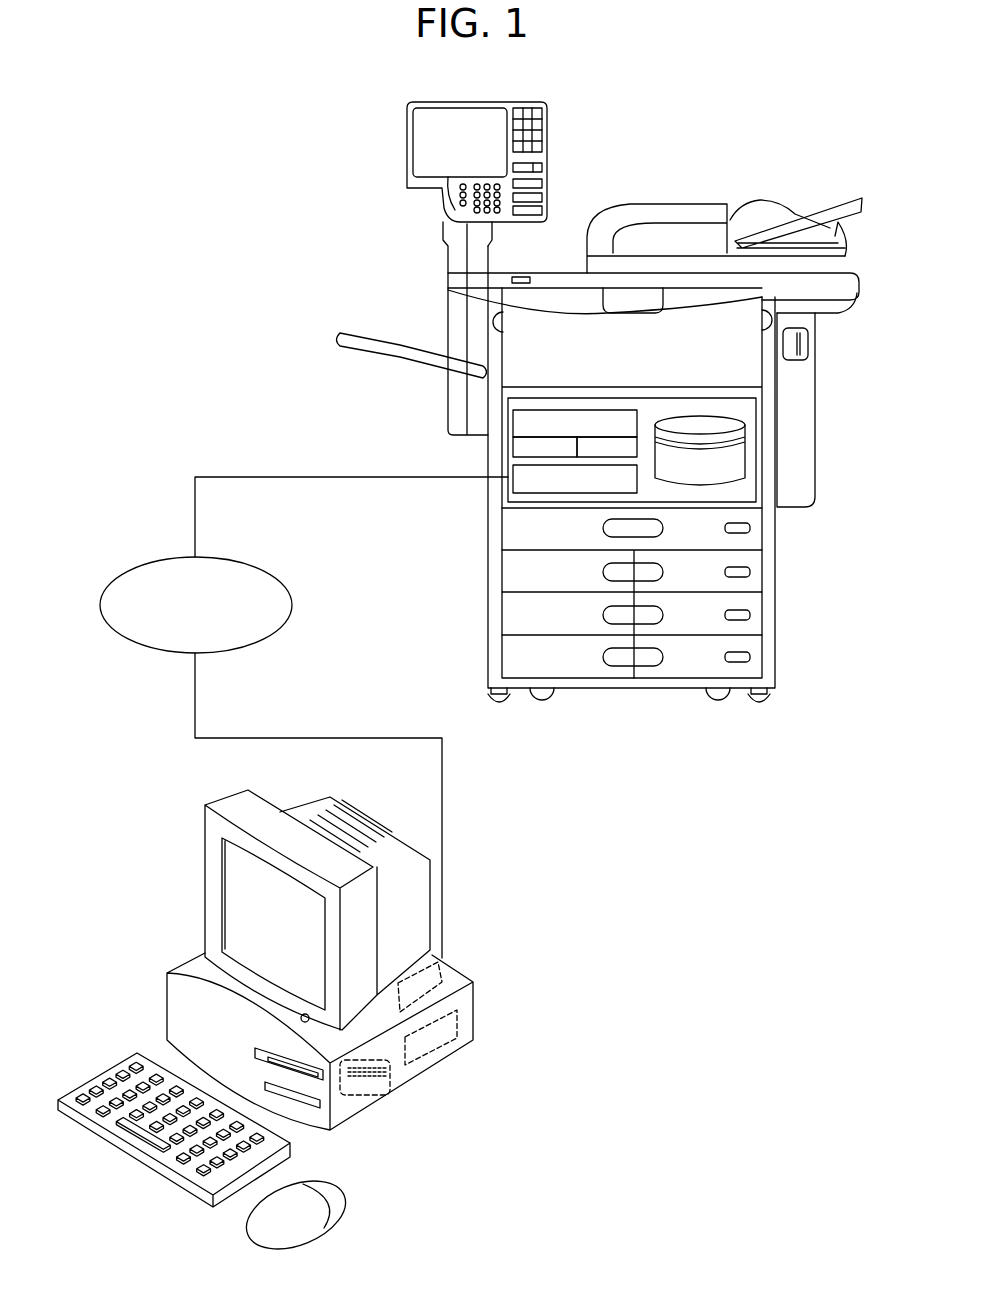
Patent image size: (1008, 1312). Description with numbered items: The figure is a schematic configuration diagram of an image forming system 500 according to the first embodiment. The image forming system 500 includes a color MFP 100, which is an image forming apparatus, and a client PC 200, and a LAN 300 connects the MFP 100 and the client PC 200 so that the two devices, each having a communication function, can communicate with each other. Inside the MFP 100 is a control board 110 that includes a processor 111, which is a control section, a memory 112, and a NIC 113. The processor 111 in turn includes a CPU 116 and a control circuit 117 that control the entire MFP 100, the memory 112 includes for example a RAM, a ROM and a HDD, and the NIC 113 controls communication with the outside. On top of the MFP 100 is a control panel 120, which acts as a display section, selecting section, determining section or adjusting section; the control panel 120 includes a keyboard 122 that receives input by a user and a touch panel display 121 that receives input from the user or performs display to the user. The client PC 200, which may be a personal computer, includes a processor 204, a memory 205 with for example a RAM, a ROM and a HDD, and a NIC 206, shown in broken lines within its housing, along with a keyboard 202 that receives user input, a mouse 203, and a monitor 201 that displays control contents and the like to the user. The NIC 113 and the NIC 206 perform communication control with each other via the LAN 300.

The image forming system 500 is at (261, 115).
The MFP 100 is at (701, 168).
The control panel 120 is at (524, 101).
The touch panel display 121 is at (425, 137).
The keyboard 122 is at (547, 130).
The control board 110 is at (757, 468).
The processor 111 is at (560, 410).
The CPU 116 is at (523, 448).
The control circuit 117 is at (632, 447).
The memory 112 is at (700, 418).
The NIC 113 is at (528, 494).
The LAN 300 is at (252, 566).
The client PC 200 is at (112, 777).
The monitor 201 is at (203, 850).
The keyboard 202 is at (112, 1068).
The mouse 203 is at (342, 1210).
The processor 204 is at (449, 1048).
The memory 205 is at (392, 1095).
The NIC 206 is at (455, 968).